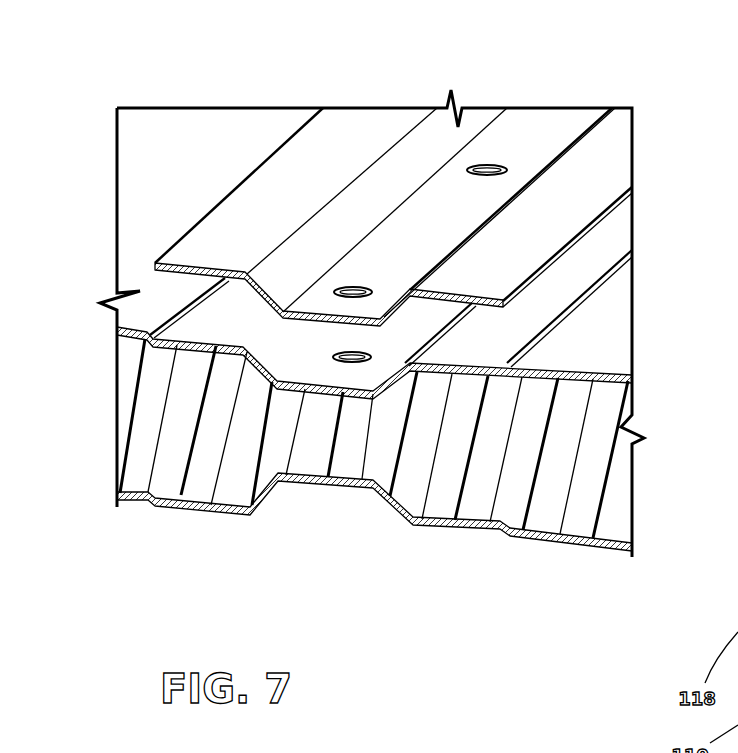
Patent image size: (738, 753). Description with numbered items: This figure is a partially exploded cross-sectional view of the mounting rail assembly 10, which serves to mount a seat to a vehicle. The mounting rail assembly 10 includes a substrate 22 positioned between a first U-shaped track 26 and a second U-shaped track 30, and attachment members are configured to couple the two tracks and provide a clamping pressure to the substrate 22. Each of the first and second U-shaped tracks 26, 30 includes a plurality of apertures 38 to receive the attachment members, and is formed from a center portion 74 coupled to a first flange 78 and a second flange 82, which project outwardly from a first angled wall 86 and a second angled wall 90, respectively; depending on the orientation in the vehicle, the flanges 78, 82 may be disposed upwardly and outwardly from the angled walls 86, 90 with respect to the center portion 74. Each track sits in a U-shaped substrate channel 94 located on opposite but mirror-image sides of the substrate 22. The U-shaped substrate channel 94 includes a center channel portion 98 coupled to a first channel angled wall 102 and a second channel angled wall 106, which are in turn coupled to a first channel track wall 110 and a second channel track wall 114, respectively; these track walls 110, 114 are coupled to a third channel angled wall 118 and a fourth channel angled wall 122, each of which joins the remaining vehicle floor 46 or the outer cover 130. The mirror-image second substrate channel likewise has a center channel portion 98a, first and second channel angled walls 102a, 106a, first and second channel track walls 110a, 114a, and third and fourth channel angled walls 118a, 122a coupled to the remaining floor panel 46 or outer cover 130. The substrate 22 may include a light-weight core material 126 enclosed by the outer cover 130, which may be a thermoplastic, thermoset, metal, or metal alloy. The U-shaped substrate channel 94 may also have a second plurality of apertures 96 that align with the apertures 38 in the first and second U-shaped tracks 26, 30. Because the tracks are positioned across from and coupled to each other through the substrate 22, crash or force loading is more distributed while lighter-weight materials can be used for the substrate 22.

The mounting rail assembly 10 is at (263, 85).
The substrate 22 is at (615, 285).
The first U-shaped track 26 is at (393, 179).
The second U-shaped track 30 is at (395, 486).
The apertures 38 is at (372, 278).
The vehicle floor 46 is at (173, 183).
The center portion 74 is at (440, 213).
The first flange 78 is at (258, 216).
The second flange 82 is at (508, 253).
The first angled wall 86 is at (302, 263).
The second angled wall 90 is at (372, 325).
The U-shaped substrate channel 94 is at (405, 341).
The second plurality of apertures 96 is at (331, 349).
The center channel portion 98 is at (207, 503).
The first channel angled wall 102 is at (262, 348).
The second channel angled wall 106 is at (390, 383).
The first channel track wall 110 is at (203, 342).
The second channel track wall 114 is at (468, 370).
The third channel angled wall 118 is at (137, 340).
The fourth channel angled wall 122 is at (513, 372).
The light-weight core material 126 is at (447, 475).
The outer cover 130 is at (588, 367).
The center channel portion 98a is at (303, 487).
The first channel angled wall 102a is at (263, 503).
The second channel angled wall 106a is at (385, 505).
The first channel track wall 110a is at (220, 503).
The second channel track wall 114a is at (477, 533).
The third channel angled wall 118a is at (150, 503).
The fourth channel angled wall 122a is at (503, 533).